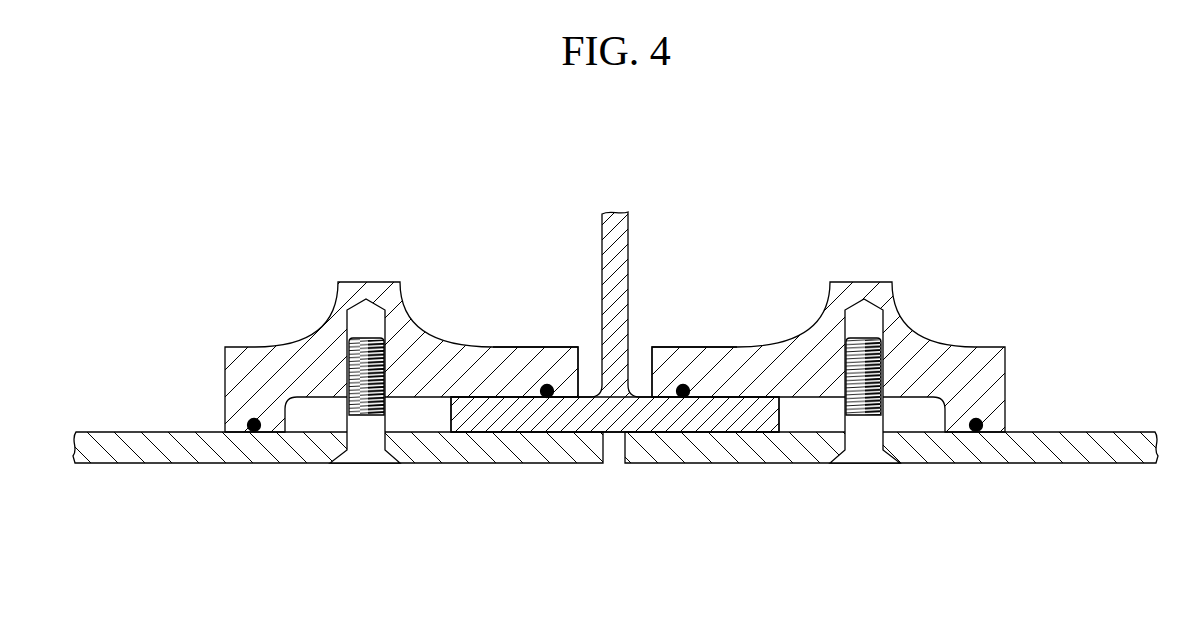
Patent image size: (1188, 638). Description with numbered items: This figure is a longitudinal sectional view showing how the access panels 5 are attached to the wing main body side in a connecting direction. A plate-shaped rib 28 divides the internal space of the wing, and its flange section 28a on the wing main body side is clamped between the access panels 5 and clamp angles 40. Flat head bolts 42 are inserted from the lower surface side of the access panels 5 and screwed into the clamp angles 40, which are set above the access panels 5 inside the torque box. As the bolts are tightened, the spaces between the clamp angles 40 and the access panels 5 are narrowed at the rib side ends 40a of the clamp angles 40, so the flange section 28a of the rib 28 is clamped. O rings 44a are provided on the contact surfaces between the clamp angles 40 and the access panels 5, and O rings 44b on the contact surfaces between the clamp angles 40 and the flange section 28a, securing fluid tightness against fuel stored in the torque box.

The access panel 5 is at (205, 465).
The rib 28 is at (605, 231).
The flange section 28a is at (552, 431).
The clamp angle 40 is at (327, 318).
The rib side end 40a is at (562, 350).
The flat head bolt 42 is at (370, 458).
The O ring 44a is at (254, 419).
The O ring 44b is at (547, 384).